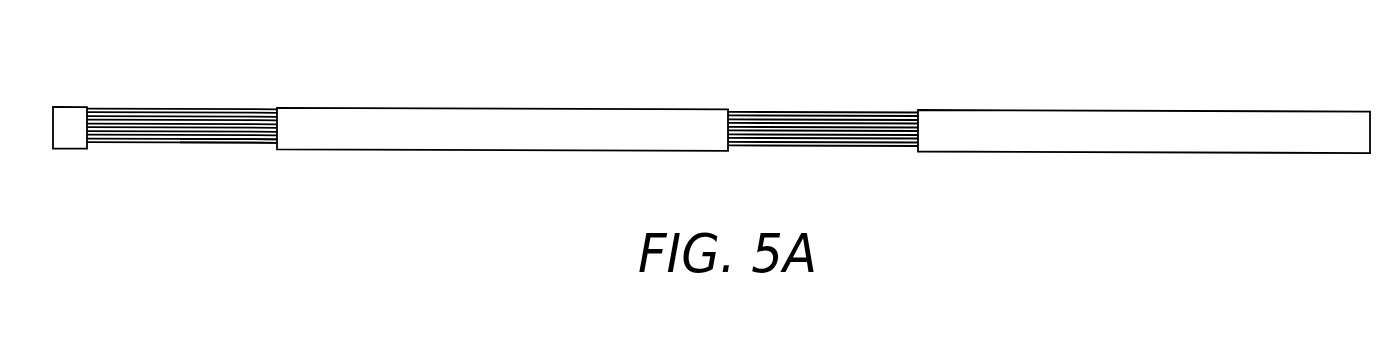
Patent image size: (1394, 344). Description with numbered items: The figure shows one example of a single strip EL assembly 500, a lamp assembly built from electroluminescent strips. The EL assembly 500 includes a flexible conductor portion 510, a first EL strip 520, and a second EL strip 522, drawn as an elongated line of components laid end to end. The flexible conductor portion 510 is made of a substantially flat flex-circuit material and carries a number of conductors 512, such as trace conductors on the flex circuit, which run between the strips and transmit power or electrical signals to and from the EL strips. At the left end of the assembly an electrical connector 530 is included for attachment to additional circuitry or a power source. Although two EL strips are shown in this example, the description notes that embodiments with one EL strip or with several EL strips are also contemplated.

The single strip EL assembly 500 is at (1252, 54).
The flexible conductor portion 510 is at (147, 143).
The conductors 512 is at (212, 142).
The first EL strip 520 is at (486, 140).
The second EL strip 522 is at (1117, 143).
The electrical connector 530 is at (67, 140).